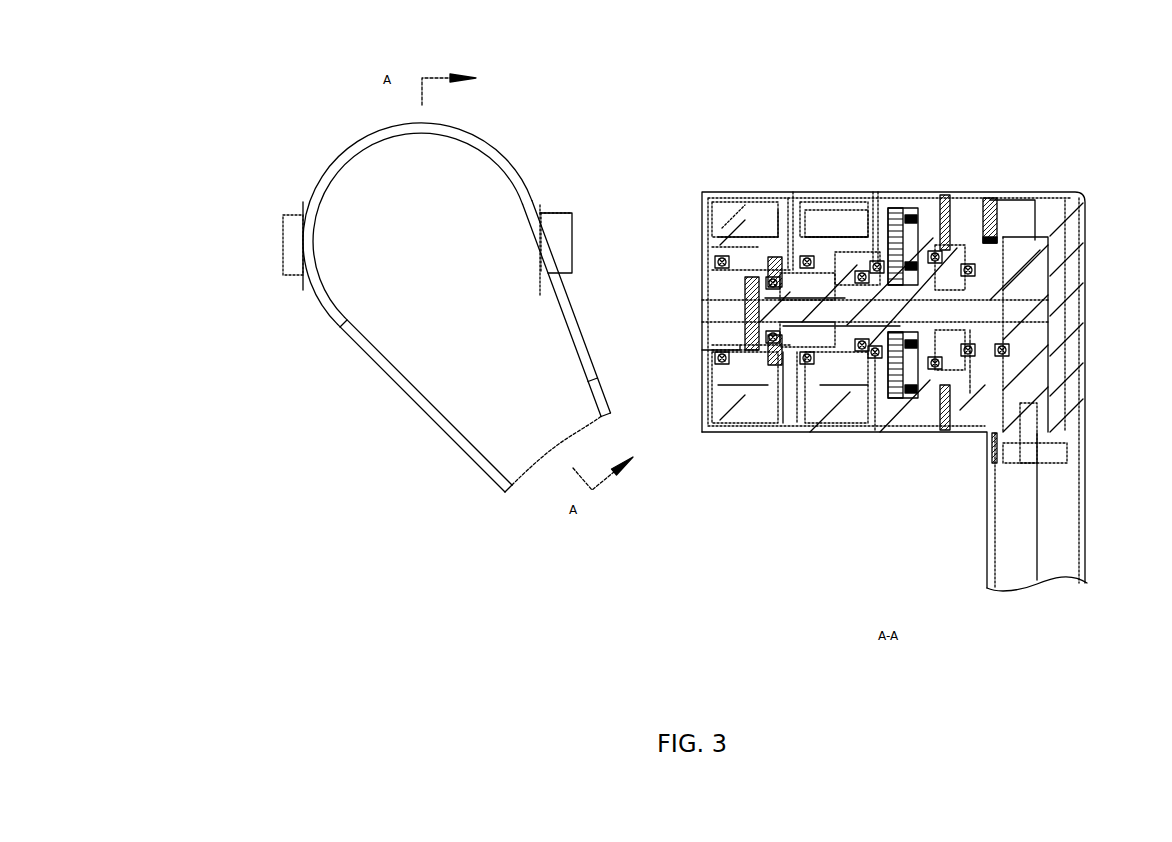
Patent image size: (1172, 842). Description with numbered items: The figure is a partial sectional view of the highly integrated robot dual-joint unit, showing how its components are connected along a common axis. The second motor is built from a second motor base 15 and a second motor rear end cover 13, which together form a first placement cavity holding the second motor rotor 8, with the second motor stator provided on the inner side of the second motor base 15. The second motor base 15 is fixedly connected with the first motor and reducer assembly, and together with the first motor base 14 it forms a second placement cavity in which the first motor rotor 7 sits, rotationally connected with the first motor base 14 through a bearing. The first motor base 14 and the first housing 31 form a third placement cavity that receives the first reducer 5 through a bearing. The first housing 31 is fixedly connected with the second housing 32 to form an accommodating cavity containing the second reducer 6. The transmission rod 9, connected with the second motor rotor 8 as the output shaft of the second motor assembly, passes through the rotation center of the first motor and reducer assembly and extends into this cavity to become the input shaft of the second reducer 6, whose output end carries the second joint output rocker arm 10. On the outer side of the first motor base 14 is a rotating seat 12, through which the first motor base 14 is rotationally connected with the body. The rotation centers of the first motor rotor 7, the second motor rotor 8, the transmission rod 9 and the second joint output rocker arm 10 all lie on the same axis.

The first reducer 5 is at (882, 362).
The second reducer 6 is at (975, 335).
The first motor rotor 7 is at (825, 368).
The second motor rotor 8 is at (717, 262).
The transmission rod 9 is at (745, 293).
The second joint output rocker arm 10 is at (1045, 350).
The rotating seat 12 is at (290, 240).
The second motor rear end cover 13 is at (702, 200).
The first motor base 14 is at (867, 192).
The second motor base 15 is at (755, 198).
The first housing 31 is at (993, 198).
The second housing 32 is at (443, 367).